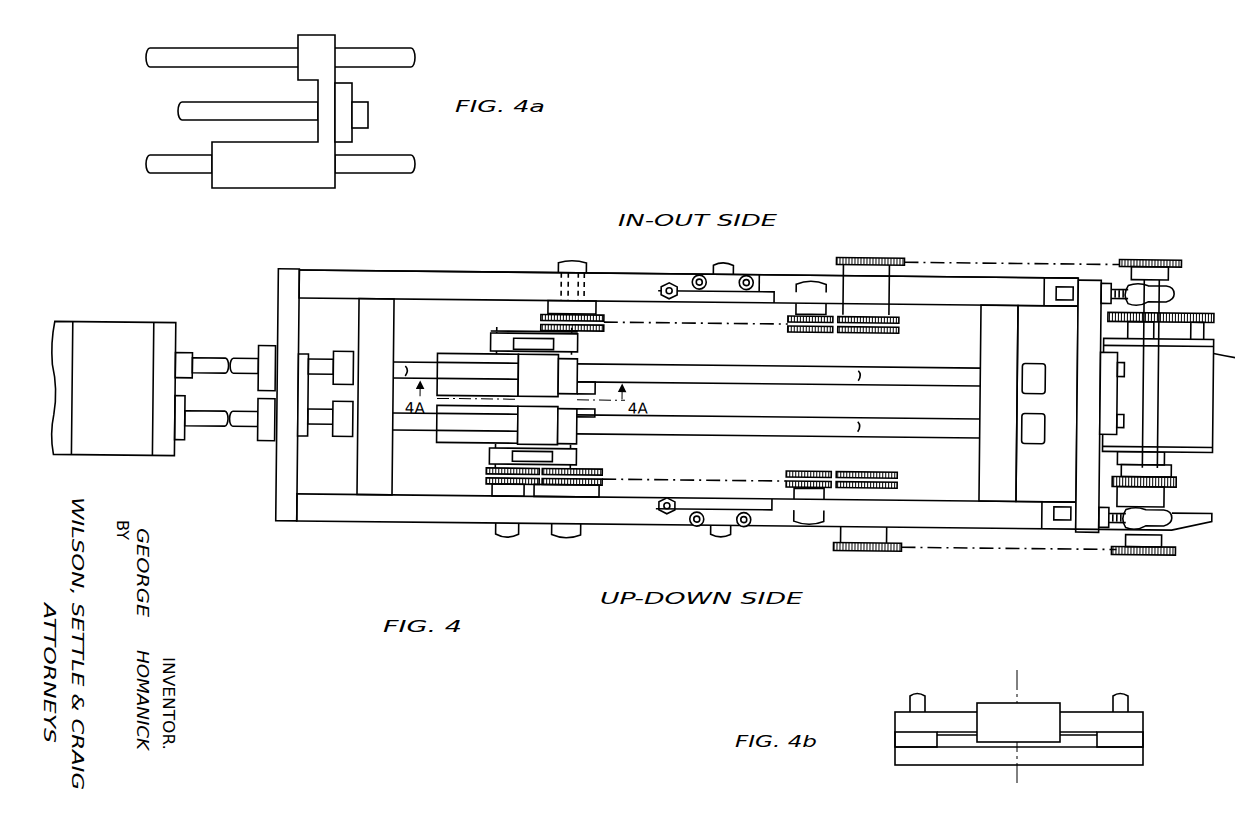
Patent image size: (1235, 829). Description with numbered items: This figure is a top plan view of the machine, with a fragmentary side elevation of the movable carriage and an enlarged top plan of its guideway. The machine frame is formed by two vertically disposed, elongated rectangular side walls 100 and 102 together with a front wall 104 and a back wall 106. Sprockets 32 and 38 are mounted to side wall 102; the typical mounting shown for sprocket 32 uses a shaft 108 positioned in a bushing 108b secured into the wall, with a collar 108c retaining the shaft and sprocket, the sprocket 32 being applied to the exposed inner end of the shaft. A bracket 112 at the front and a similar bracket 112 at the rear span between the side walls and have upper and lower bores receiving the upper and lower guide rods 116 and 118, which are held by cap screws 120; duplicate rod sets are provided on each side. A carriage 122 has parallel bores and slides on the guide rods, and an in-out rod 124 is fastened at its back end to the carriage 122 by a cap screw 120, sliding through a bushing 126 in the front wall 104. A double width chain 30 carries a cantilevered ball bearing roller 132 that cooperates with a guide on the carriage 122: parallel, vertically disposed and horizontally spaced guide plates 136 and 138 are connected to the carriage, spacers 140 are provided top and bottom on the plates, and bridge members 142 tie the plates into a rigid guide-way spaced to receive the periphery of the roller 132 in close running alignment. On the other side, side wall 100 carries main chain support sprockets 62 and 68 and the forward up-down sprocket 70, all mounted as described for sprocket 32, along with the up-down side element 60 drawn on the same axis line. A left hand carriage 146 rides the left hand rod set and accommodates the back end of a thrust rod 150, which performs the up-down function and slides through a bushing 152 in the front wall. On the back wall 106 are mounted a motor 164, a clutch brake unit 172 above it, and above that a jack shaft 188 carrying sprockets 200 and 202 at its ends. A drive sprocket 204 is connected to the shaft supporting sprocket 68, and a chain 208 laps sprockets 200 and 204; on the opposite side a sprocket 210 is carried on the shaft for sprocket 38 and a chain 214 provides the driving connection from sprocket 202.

In FIG. 4, the double width chain 30 is at (711, 321).
In FIG. 4, the sprocket 32 is at (603, 314).
In FIG. 4, the sprocket 38 is at (900, 325).
In FIG. 4, the up-down drive shaft axis 60 is at (695, 475).
In FIG. 4, the main chain support sprocket 62 is at (588, 477).
In FIG. 4, the main chain support sprocket 68 is at (900, 485).
In FIG. 4, the up-down sprocket 70 is at (487, 478).
In FIG. 4, the side wall 100 is at (331, 522).
In FIG. 4, the side wall 102 is at (340, 256).
In FIG. 4, the front wall 104 is at (278, 505).
In FIG. 4, the back wall 106 is at (1085, 526).
In FIG. 4, the shaft 108 is at (585, 263).
In FIG. 4, the bushing 108b is at (559, 280).
In FIG. 4, the collar 108c is at (568, 268).
In FIG. 4, the bracket 112 is at (357, 321).
In FIG. 4A, the upper guide rod 116 is at (228, 55).
In FIG. 4, the upper guide rod 116 is at (612, 368).
In FIG. 4A, the lower guide rod 118 is at (200, 176).
In FIG. 4, the lower guide rod 118 is at (724, 352).
In FIG. 4A, the cap screw 120 is at (370, 113).
In FIG. 4, the cap screw 120 is at (340, 440).
In FIG. 4A, the carriage 122 is at (270, 190).
In FIG. 4, the carriage 122 is at (483, 352).
In FIG. 4A, the in-out rod 124 is at (238, 105).
In FIG. 4, the in-out rod 124 is at (205, 362).
In FIG. 4, the bushing 126 is at (270, 344).
In FIG. 4, the ball bearing roller 132 is at (531, 338).
In FIG. 4B, the ball bearing roller 132 is at (1024, 713).
In FIG. 4B, the guide plate 136 is at (953, 719).
In FIG. 4B, the guide plate 138 is at (1085, 714).
In FIG. 4B, the spacer 140 is at (895, 742).
In FIG. 4B, the bridge member 142 is at (1066, 768).
In FIG. 4, the left hand carriage 146 is at (455, 445).
In FIG. 4, the thrust rod 150 is at (213, 430).
In FIG. 4, the bushing 152 is at (270, 448).
In FIG. 4, the motor 164 is at (1218, 478).
In FIG. 4, the clutch brake unit 172 is at (1200, 414).
In FIG. 4, the jack shaft 188 is at (1148, 378).
In FIG. 4, the sprocket 200 is at (1159, 547).
In FIG. 4, the sprocket 202 is at (1165, 254).
In FIG. 4, the drive sprocket 204 is at (859, 549).
In FIG. 4, the chain 208 is at (977, 544).
In FIG. 4, the sprocket 210 is at (870, 252).
In FIG. 4, the chain 214 is at (1008, 257).